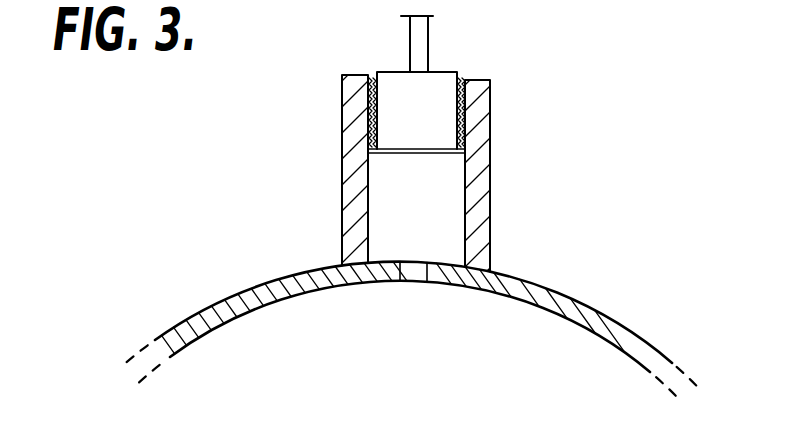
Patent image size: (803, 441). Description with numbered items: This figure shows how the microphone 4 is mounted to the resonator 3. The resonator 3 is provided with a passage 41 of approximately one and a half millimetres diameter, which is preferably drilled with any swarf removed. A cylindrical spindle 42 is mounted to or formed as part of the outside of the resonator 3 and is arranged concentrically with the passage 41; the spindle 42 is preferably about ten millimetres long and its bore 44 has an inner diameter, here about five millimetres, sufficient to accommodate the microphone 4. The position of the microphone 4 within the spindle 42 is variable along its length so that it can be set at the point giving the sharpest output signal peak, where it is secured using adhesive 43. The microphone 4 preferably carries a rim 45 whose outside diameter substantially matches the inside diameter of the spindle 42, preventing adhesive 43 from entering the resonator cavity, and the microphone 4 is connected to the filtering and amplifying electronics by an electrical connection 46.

The resonator 3 is at (593, 300).
The microphone 4 is at (437, 80).
The passage 41 is at (413, 284).
The cylindrical spindle 42 is at (473, 197).
The adhesive 43 is at (368, 97).
The bore 44 is at (395, 207).
The rim 45 is at (368, 159).
The electrical connection 46 is at (410, 32).